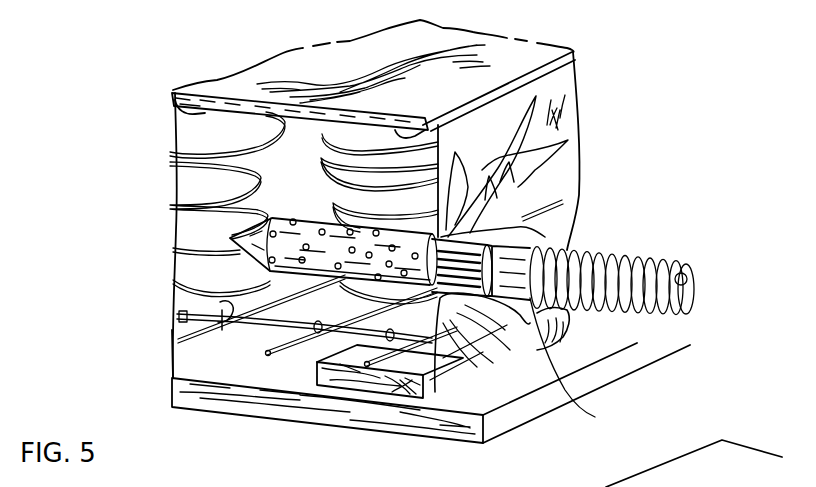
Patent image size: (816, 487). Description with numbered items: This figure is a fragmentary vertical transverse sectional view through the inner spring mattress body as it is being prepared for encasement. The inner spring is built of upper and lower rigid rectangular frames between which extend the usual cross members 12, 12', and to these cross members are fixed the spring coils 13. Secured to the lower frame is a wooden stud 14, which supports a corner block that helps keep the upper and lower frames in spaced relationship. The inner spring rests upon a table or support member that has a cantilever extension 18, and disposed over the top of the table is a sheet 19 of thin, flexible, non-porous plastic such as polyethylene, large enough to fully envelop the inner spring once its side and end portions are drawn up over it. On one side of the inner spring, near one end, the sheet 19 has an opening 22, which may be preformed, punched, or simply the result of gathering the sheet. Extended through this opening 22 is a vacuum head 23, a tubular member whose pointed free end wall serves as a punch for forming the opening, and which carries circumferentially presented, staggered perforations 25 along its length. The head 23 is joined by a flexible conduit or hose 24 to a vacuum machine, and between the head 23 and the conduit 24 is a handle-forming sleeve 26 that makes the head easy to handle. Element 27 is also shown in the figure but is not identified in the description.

The cross member 12 is at (264, 206).
The cross member 12' is at (174, 399).
The spring coils 13 is at (185, 133).
The stud 14 is at (358, 390).
The extension 18 is at (317, 400).
The sheet 19 is at (573, 125).
The opening 22 is at (540, 235).
The vacuum head 23 is at (303, 260).
The flexible conduit or hose 24 is at (610, 252).
The perforations 25 is at (338, 268).
The handle-forming sleeve 26 is at (593, 416).
The floor 27 is at (532, 486).